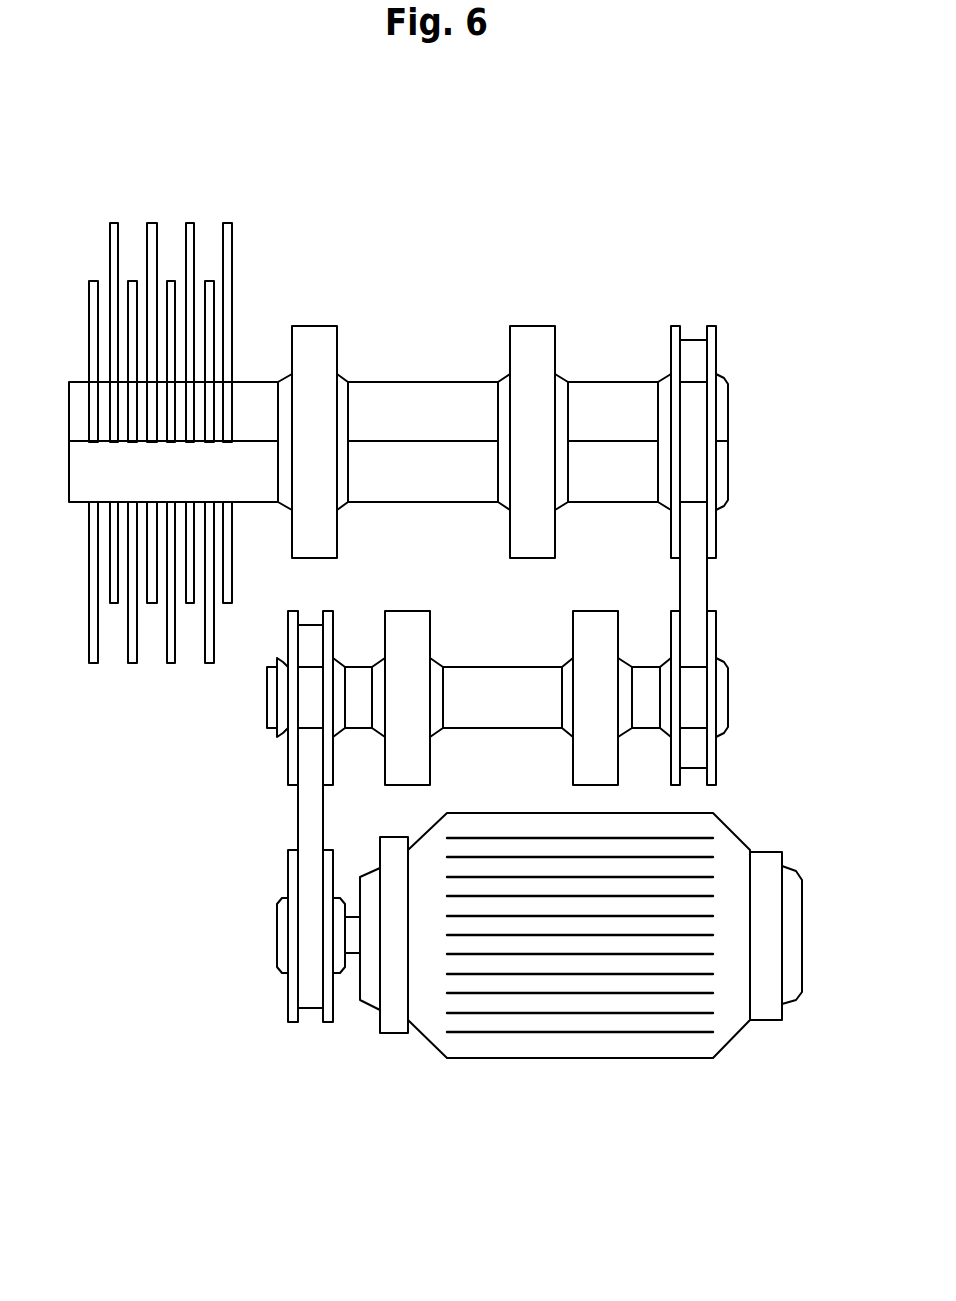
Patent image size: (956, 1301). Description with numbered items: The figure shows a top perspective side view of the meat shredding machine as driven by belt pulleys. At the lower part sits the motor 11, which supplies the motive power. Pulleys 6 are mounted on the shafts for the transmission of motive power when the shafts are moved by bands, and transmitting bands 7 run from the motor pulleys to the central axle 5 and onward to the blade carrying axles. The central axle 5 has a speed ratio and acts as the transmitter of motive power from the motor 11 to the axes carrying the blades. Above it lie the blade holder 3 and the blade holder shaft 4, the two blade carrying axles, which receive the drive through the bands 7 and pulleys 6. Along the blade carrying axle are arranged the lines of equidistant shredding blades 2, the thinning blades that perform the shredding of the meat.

The shredding blades 2 is at (114, 228).
The blade holder 3 is at (392, 397).
The blade holder shaft 4 is at (445, 420).
The central axle 5 is at (482, 693).
The pulleys 6 is at (723, 688).
The transmitting bands 7 is at (698, 603).
The motor 11 is at (475, 1047).